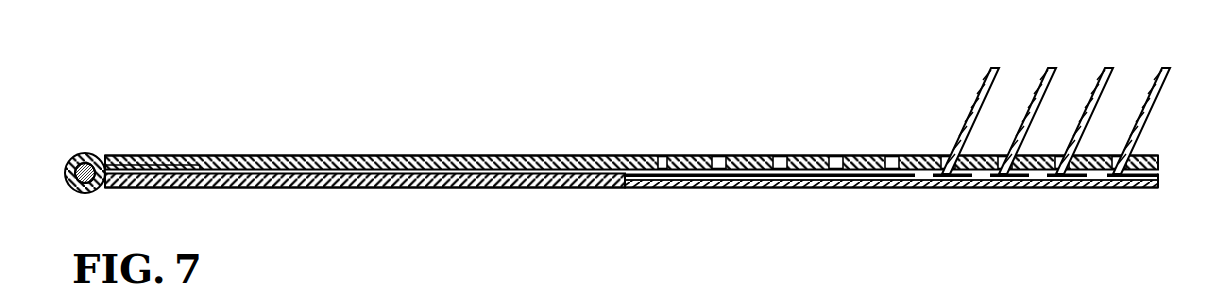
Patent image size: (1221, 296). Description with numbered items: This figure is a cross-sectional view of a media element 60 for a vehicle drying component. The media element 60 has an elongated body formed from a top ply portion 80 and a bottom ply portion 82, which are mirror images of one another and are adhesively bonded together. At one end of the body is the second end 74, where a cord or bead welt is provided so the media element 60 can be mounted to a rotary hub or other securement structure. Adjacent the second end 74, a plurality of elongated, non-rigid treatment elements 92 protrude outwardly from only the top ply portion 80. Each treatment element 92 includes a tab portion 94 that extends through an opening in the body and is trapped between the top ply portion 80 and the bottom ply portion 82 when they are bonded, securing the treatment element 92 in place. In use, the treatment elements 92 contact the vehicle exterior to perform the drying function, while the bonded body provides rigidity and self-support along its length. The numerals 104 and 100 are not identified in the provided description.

The media element 60 is at (462, 128).
The second end 74 is at (88, 153).
The top ply portion 80 is at (593, 155).
The bottom ply portion 82 is at (523, 188).
The treatment elements 92 is at (1034, 97).
The tab portion 94 is at (984, 180).
The support member 104 is at (807, 295).
The base 100 is at (1127, 295).